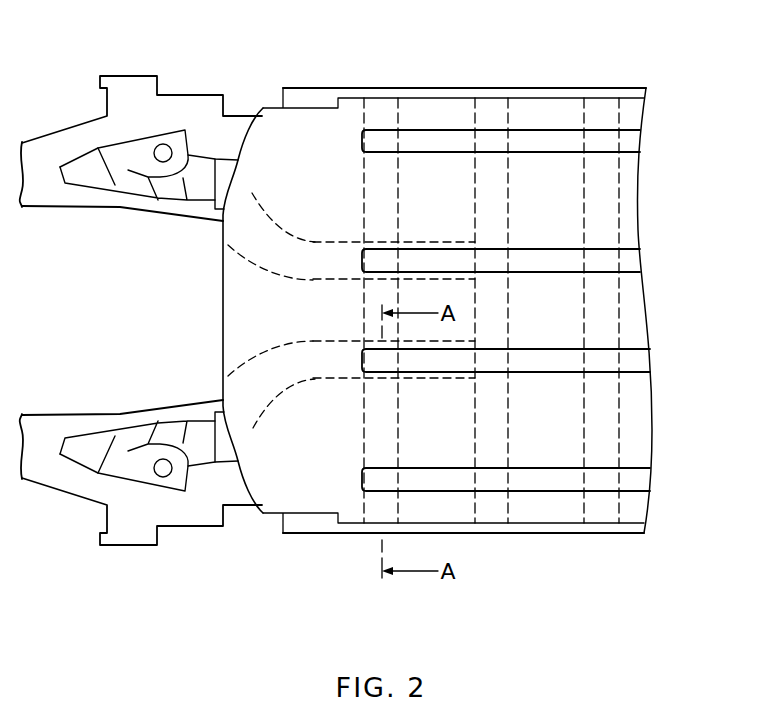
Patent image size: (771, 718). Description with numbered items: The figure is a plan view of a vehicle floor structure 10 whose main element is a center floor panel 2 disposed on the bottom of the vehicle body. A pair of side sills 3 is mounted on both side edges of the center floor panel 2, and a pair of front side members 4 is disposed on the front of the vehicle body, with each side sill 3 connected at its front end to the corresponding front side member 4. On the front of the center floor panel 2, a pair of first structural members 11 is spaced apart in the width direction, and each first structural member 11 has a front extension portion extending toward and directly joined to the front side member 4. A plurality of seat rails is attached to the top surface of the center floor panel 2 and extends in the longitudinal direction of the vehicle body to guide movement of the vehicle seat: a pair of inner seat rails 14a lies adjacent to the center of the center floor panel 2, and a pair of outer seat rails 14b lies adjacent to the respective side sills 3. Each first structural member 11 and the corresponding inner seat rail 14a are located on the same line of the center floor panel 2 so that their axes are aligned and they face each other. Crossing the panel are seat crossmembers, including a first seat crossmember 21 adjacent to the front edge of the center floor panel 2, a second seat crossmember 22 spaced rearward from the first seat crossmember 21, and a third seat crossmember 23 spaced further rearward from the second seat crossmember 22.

The center floor panel 2 is at (318, 142).
The side sill 3 is at (437, 92).
The front side member 4 is at (120, 203).
The vehicle floor structure 10 is at (587, 64).
The first structural member 11 is at (352, 341).
The inner seat rail 14a is at (632, 260).
The outer seat rail 14b is at (505, 138).
The first seat crossmember 21 is at (364, 217).
The second seat crossmember 22 is at (475, 217).
The third seat crossmember 23 is at (583, 217).